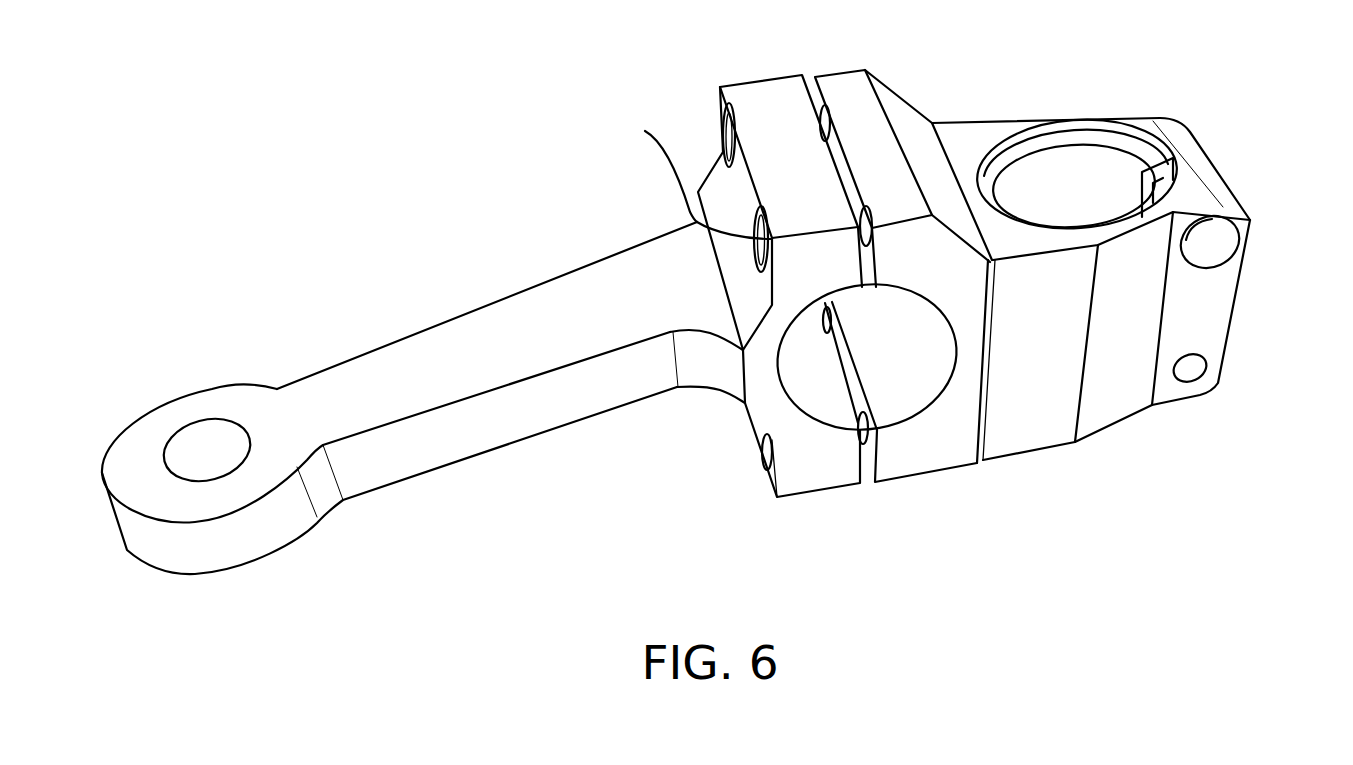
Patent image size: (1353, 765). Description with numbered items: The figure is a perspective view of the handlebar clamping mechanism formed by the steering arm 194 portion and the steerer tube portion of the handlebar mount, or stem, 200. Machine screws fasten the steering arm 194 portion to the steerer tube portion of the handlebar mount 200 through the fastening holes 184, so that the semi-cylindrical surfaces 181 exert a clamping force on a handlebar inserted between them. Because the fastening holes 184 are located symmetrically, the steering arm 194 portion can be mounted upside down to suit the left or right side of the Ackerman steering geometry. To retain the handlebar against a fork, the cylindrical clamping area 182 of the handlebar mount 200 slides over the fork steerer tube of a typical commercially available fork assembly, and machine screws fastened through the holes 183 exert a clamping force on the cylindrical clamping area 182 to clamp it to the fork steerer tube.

The steering arm 194 is at (487, 337).
The handlebar mount 200 is at (1147, 128).
The fastening holes 184 is at (722, 150).
The semi-cylindrical surfaces 181 is at (912, 380).
The cylindrical clamping area 182 is at (1093, 182).
The holes 183 is at (1215, 248).